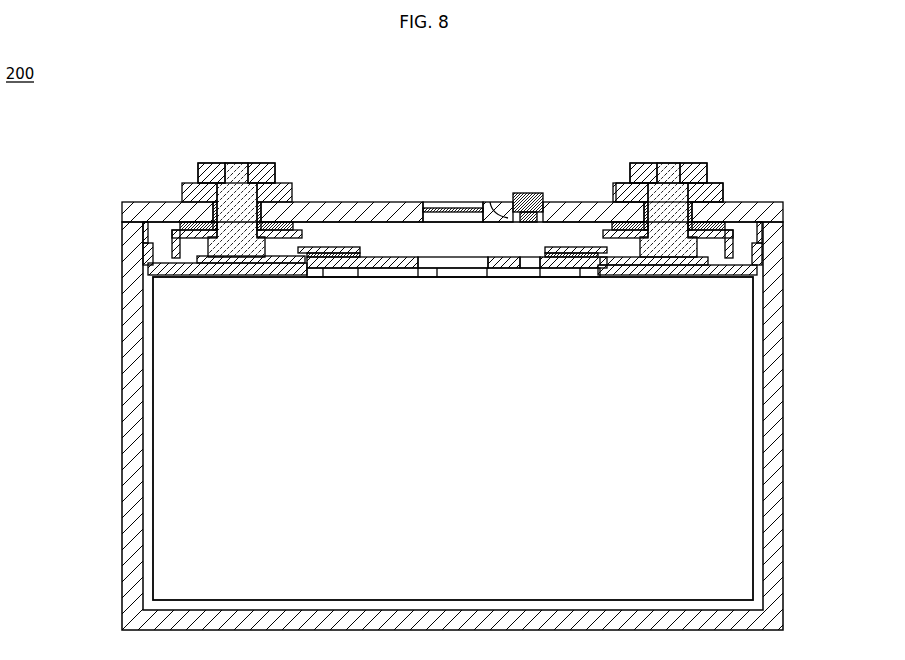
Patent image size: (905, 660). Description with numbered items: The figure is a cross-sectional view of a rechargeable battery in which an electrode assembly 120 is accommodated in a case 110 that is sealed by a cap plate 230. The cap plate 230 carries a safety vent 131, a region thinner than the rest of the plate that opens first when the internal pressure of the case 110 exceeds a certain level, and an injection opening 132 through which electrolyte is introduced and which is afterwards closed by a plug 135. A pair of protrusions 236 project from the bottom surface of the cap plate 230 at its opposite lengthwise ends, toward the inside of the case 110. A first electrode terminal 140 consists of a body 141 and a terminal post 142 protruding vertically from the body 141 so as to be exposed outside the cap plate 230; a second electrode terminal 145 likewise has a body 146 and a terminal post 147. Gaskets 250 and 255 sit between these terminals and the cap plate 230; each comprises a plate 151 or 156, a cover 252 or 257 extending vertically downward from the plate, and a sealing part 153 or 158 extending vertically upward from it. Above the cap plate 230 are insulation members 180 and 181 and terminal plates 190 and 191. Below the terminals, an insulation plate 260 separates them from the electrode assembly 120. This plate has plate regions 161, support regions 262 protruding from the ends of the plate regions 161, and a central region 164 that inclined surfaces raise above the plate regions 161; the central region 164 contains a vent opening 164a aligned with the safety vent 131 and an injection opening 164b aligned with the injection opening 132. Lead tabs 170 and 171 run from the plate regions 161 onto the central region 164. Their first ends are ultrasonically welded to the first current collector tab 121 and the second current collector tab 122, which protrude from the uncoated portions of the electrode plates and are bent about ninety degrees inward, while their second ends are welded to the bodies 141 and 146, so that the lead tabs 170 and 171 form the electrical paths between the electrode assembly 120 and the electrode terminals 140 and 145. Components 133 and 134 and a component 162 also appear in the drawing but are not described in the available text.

The case 110 is at (780, 496).
The electrode assembly 120 is at (728, 411).
The first current collector tab 121 is at (350, 274).
The second current collector tab 122 is at (578, 268).
The safety vent 131 is at (437, 207).
The injection opening 132 is at (497, 212).
The plug 135 is at (527, 193).
The first gasket 133 is at (214, 202).
The second gasket 134 is at (688, 163).
The first electrode terminal 140 is at (261, 166).
The body 141 is at (306, 163).
The terminal post 142 is at (236, 185).
The second electrode terminal 145 is at (653, 166).
The body 146 is at (613, 200).
The terminal post 147 is at (668, 185).
The plate 151 is at (172, 250).
The sealing part 153 is at (180, 223).
The plate 156 is at (688, 274).
The sealing part 158 is at (740, 322).
The plate region 161 is at (250, 264).
The second support member 162 is at (760, 252).
The central region 164 is at (357, 307).
The vent opening 164a is at (438, 264).
The injection opening 164b is at (505, 266).
The lead tab 170 is at (340, 247).
The lead tab 171 is at (552, 247).
The insulation member 180 is at (186, 190).
The insulation member 181 is at (722, 186).
The terminal plate 190 is at (199, 162).
The terminal plate 191 is at (710, 162).
The cap plate 230 is at (122, 213).
The protrusion 236 is at (146, 228).
The gasket 250 is at (154, 253).
The cover 252 is at (147, 258).
The gasket 255 is at (677, 293).
The cover 257 is at (730, 272).
The insulation plate 260 is at (283, 327).
The support region 262 is at (151, 280).